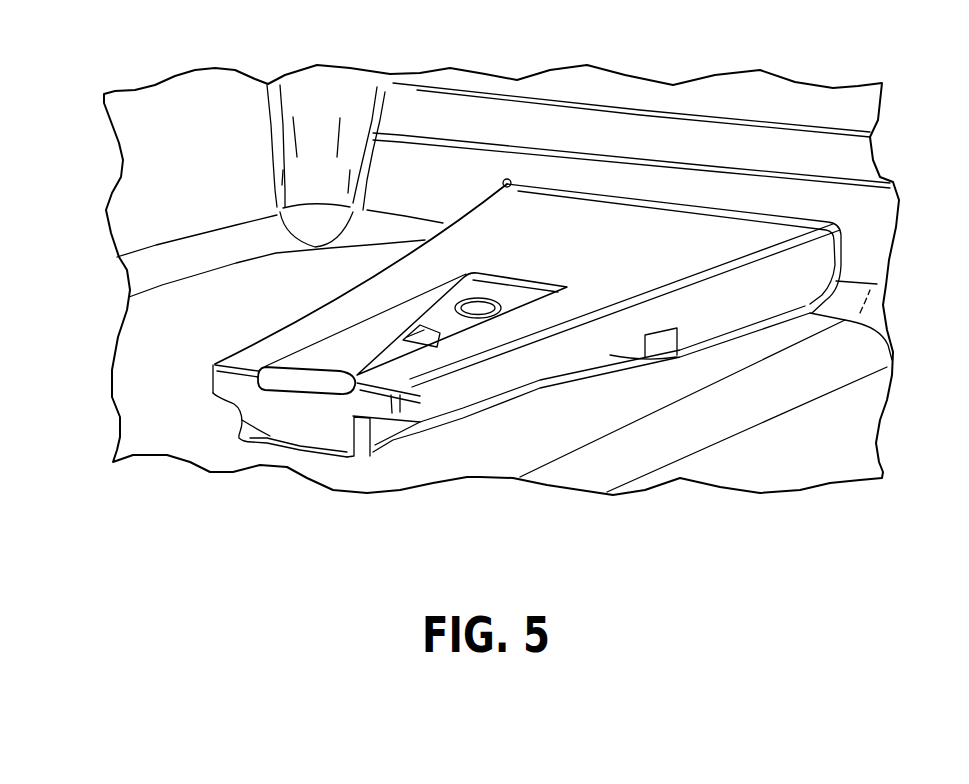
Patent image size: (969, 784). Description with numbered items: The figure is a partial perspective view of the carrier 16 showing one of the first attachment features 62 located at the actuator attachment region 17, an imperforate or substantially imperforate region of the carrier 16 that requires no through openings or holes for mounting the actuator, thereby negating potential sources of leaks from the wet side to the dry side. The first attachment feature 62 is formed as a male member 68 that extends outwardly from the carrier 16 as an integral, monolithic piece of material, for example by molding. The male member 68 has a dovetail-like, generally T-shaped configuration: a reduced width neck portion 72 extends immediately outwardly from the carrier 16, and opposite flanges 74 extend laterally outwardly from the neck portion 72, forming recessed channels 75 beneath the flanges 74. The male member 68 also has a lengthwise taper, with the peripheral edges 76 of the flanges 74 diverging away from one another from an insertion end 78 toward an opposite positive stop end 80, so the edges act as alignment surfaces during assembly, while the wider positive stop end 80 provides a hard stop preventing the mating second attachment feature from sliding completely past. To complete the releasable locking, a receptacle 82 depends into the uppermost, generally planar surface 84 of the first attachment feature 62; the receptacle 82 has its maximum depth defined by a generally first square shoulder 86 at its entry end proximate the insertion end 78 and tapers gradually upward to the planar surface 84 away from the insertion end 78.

The carrier 16 is at (825, 462).
The actuator attachment region 17 is at (148, 337).
The first attachment feature 62 is at (431, 311).
The male member 68 is at (515, 195).
The neck portion 72 is at (333, 432).
The flange 74 is at (440, 398).
The recessed channel 75 is at (240, 433).
The peripheral edge 76 is at (215, 377).
The insertion end 78 is at (270, 438).
The positive stop end 80 is at (657, 197).
The receptacle 82 is at (440, 317).
The planar surface 84 is at (592, 210).
The first square shoulder 86 is at (330, 368).